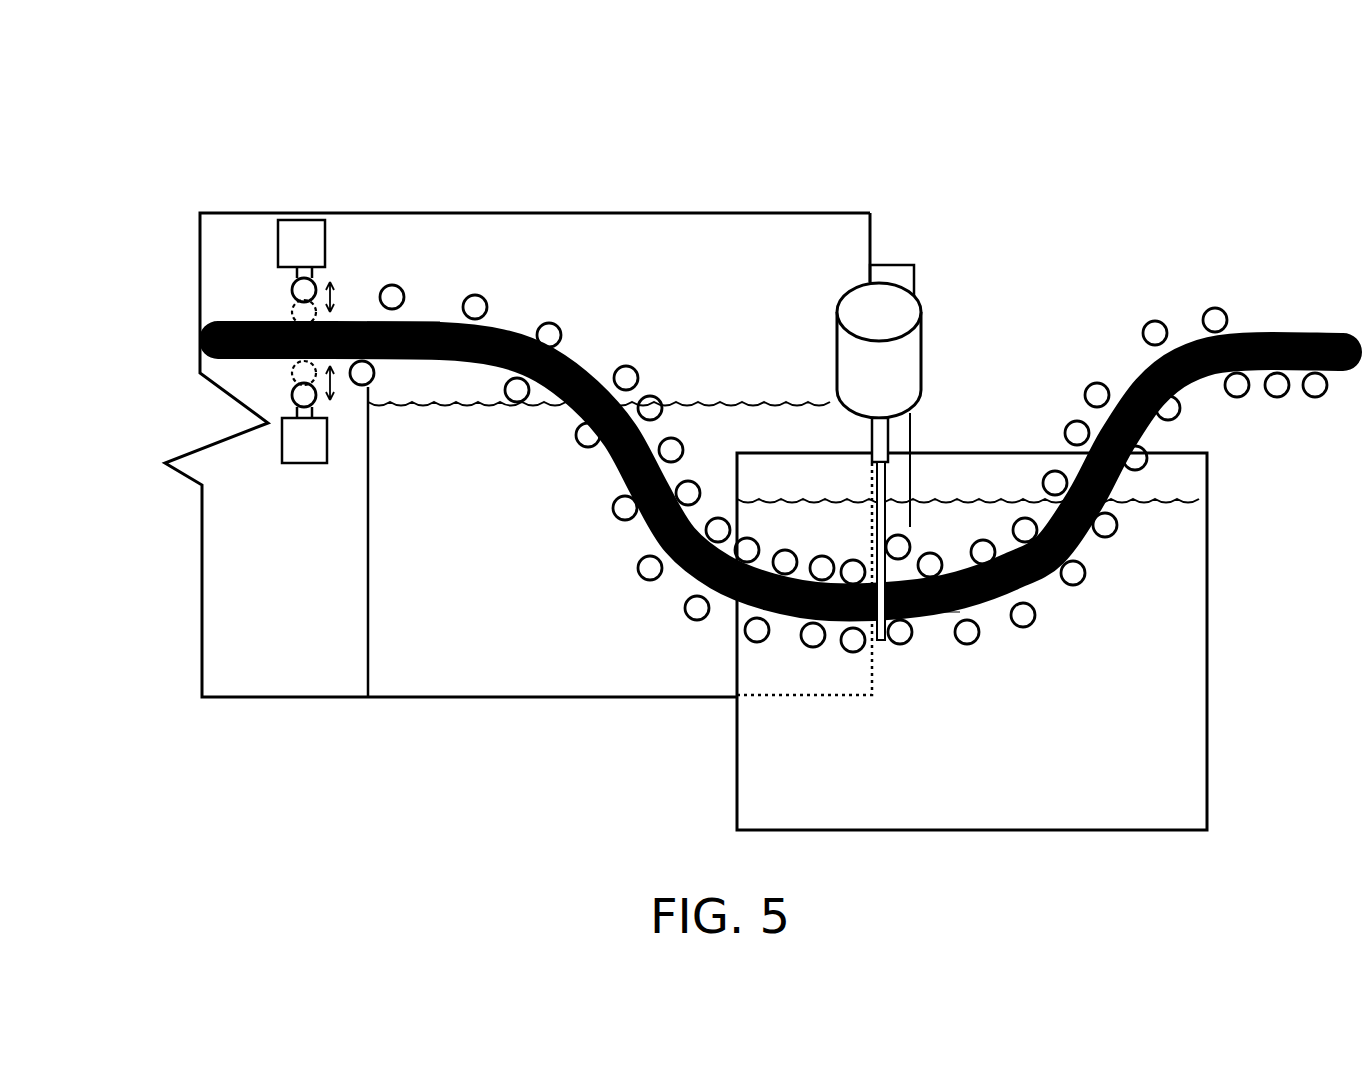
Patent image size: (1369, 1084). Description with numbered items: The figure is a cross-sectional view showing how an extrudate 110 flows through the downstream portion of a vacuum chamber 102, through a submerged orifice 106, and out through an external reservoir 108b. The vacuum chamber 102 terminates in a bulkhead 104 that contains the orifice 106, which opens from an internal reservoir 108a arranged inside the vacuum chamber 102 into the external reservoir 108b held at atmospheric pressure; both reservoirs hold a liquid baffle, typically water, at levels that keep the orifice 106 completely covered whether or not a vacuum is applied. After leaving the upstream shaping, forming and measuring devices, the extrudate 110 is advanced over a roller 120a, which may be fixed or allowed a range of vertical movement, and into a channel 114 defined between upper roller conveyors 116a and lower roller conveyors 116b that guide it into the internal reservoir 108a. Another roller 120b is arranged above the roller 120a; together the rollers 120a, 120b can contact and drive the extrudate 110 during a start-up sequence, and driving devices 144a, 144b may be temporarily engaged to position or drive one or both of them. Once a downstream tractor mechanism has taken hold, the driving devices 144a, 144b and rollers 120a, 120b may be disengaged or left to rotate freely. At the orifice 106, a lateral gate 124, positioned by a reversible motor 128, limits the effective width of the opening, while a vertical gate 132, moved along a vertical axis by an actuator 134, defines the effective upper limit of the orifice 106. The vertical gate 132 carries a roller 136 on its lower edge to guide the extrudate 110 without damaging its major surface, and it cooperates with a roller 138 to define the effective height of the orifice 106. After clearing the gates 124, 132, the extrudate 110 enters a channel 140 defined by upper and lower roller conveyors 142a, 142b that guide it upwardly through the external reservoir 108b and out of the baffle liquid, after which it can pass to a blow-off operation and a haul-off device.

The vacuum chamber 102 is at (518, 213).
The bulkhead 104 is at (872, 228).
The orifice 106 is at (853, 640).
The internal reservoir 108a is at (448, 645).
The external reservoir 108b is at (1155, 665).
The extrudate 110 is at (205, 335).
The channel 114 is at (367, 313).
The upper roller conveyor 116a is at (392, 297).
The lower roller conveyor 116b is at (362, 373).
The roller 120a is at (305, 395).
The roller 120b is at (304, 290).
The gate 124 is at (888, 517).
The reversible motor 128 is at (923, 352).
The vertical gate 132 is at (907, 452).
The actuator 134 is at (880, 273).
The roller 136 is at (932, 618).
The roller 138 is at (900, 632).
The channel 140 is at (1242, 330).
The upper roller conveyor 142a is at (1215, 320).
The lower roller conveyor 142b is at (1237, 385).
The driving device 144a is at (293, 467).
The driving device 144b is at (278, 243).